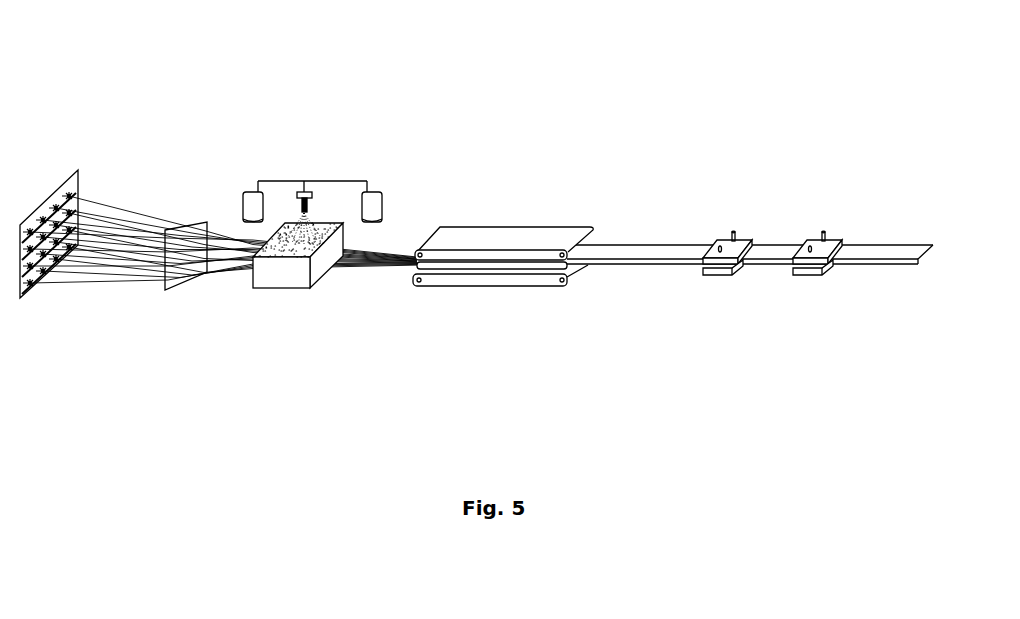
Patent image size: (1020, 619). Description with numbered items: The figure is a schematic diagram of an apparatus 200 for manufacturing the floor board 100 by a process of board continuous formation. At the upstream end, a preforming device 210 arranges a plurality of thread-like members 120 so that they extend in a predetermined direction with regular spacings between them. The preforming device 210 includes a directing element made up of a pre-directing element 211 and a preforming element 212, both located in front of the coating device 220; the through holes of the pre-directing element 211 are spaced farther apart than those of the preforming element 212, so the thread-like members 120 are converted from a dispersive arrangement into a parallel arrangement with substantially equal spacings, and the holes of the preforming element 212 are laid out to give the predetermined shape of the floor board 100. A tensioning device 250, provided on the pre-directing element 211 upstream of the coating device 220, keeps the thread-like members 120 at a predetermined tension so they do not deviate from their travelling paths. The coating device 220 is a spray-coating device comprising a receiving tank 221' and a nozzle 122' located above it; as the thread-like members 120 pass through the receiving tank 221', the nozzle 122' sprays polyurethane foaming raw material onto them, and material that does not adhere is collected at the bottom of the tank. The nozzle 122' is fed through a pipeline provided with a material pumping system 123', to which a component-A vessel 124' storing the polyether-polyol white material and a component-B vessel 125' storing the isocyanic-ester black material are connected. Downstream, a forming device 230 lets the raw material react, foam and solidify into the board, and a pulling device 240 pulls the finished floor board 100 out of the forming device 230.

The apparatus 200 is at (476, 177).
The preforming device 210 is at (114, 217).
The pre-directing element 211 is at (76, 171).
The preforming element 212 is at (207, 224).
The tensioning device 250 is at (38, 288).
The thread-like members 120 is at (407, 238).
The coating device 220 is at (308, 244).
The receiving tank 221' is at (281, 296).
The nozzle 122' is at (306, 199).
The material pumping system 123' is at (312, 167).
The component-A vessel 124' is at (258, 182).
The component-B vessel 125' is at (381, 182).
The forming device 230 is at (510, 220).
The floor board 100 is at (655, 246).
The pulling device 240 is at (742, 230).